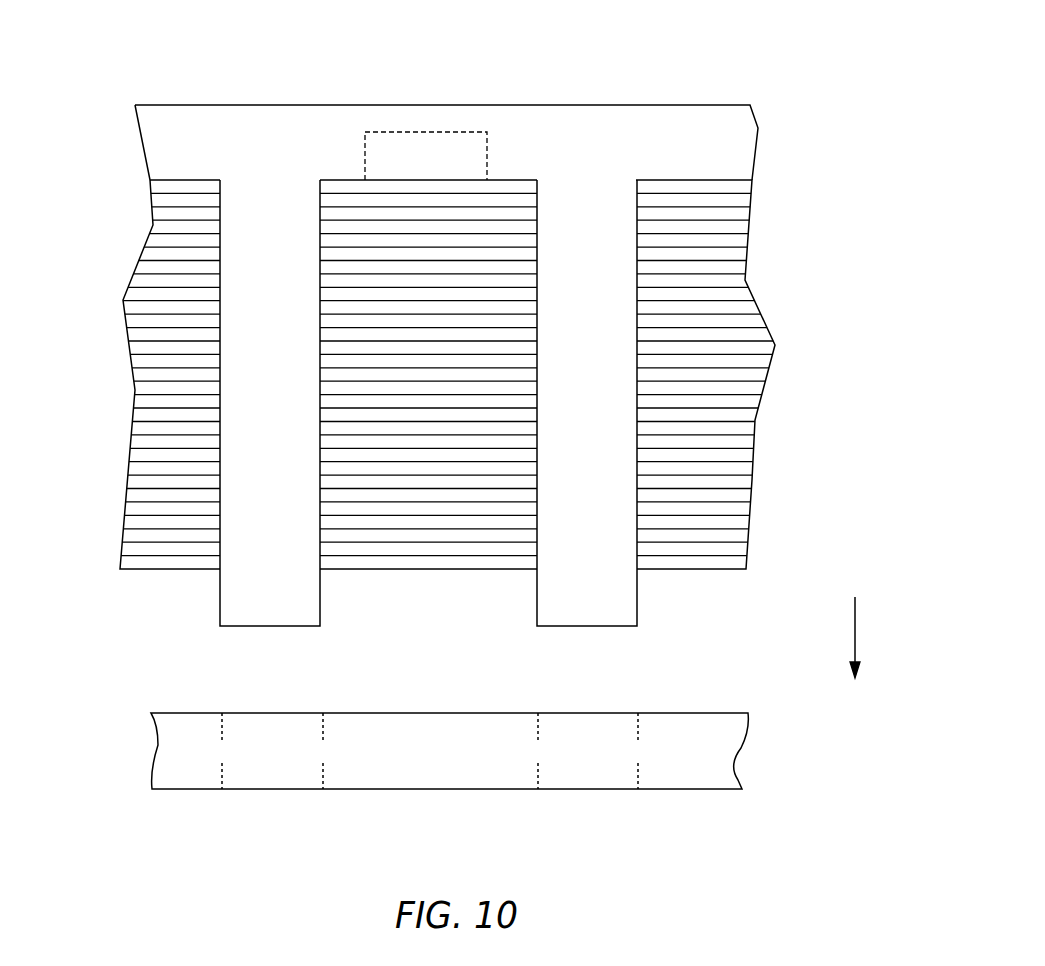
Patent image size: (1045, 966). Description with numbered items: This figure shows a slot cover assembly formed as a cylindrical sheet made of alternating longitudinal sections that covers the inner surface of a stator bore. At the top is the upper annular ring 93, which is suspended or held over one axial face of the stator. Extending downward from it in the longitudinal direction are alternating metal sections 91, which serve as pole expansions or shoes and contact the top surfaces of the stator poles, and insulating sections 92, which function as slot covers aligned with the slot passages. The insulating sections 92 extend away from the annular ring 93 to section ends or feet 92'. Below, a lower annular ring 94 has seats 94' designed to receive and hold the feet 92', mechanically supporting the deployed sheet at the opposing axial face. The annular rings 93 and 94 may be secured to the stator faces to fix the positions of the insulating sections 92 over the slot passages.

The upper annular ring 93 is at (538, 122).
The metal section 91 is at (148, 390).
The insulating section 92 is at (443, 374).
The feet 92' is at (427, 419).
The lower annular ring 94 is at (460, 800).
The seats 94' is at (430, 790).